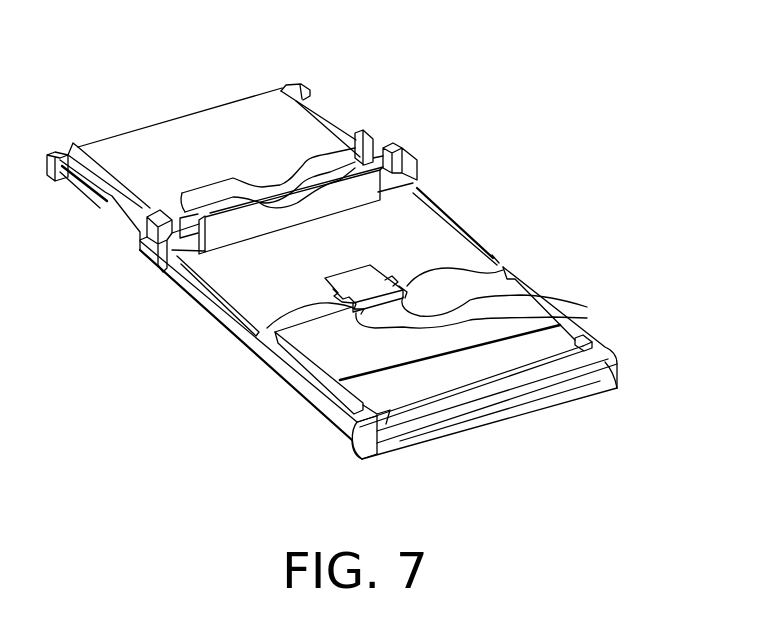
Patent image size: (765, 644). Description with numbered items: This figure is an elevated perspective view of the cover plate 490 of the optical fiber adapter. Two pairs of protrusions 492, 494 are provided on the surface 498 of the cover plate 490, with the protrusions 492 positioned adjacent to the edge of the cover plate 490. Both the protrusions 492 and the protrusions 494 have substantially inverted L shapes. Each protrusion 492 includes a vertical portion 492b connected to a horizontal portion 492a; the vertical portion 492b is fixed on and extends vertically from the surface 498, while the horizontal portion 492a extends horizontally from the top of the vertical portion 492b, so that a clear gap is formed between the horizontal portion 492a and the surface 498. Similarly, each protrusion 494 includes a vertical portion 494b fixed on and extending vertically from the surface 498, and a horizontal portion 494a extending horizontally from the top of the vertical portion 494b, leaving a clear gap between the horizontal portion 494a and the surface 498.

The cover plate 490 is at (583, 138).
The protrusions 492 is at (385, 416).
The horizontal portion 492a is at (388, 430).
The vertical portion 492b is at (360, 456).
The protrusions 494 is at (587, 307).
The horizontal portion 494a is at (496, 259).
The vertical portion 494b is at (478, 292).
The surface 498 is at (473, 378).